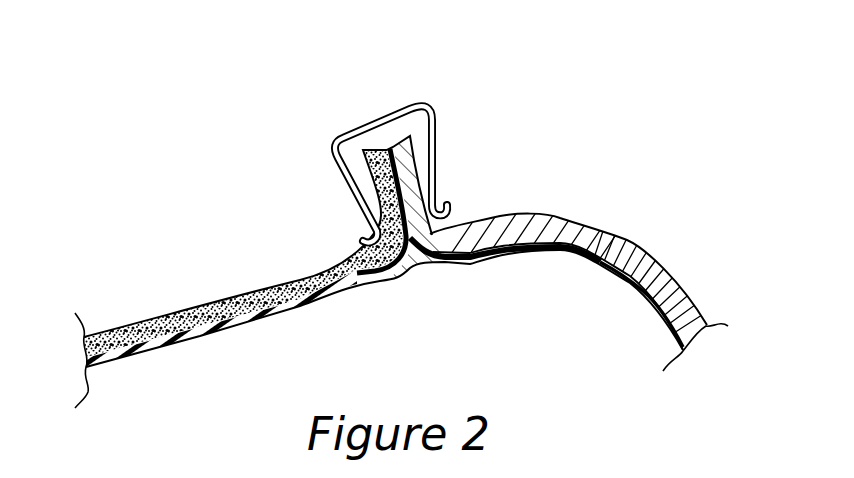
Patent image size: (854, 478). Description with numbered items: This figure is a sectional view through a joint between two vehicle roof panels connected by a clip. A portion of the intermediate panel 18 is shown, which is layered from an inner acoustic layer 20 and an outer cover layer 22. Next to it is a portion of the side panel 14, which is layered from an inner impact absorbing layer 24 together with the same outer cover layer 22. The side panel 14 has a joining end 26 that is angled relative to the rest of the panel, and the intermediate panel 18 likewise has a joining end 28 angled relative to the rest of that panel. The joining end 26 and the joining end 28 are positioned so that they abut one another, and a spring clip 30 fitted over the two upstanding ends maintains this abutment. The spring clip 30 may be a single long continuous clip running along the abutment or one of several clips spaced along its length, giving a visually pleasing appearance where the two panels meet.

The side panel 14 is at (586, 228).
The intermediate panel 18 is at (222, 302).
The inner acoustic layer 20 is at (132, 328).
The outer cover layer 22 is at (258, 327).
The inner impact absorbing layer 24 is at (660, 270).
The joining end 26 is at (413, 174).
The joining end 28 is at (378, 196).
The spring clip 30 is at (380, 115).